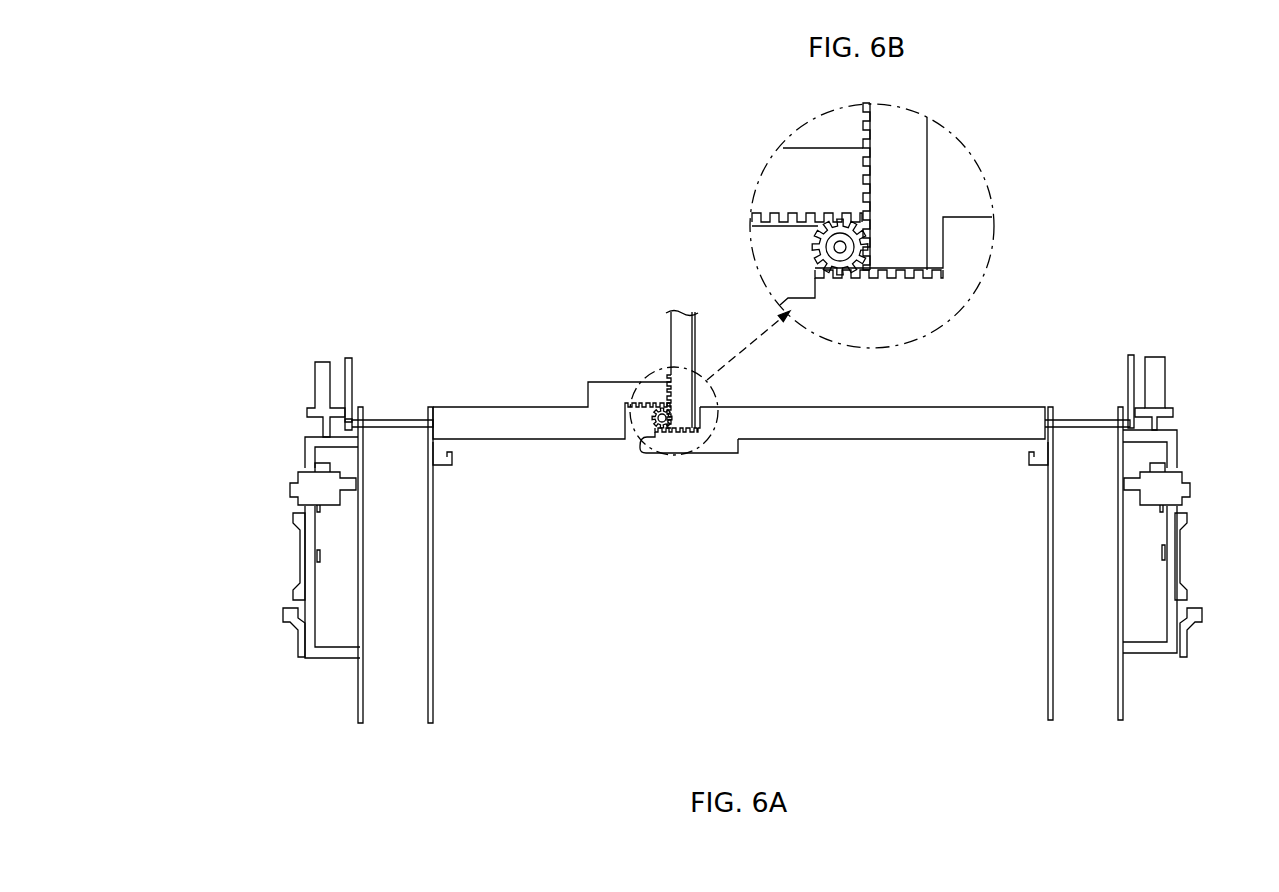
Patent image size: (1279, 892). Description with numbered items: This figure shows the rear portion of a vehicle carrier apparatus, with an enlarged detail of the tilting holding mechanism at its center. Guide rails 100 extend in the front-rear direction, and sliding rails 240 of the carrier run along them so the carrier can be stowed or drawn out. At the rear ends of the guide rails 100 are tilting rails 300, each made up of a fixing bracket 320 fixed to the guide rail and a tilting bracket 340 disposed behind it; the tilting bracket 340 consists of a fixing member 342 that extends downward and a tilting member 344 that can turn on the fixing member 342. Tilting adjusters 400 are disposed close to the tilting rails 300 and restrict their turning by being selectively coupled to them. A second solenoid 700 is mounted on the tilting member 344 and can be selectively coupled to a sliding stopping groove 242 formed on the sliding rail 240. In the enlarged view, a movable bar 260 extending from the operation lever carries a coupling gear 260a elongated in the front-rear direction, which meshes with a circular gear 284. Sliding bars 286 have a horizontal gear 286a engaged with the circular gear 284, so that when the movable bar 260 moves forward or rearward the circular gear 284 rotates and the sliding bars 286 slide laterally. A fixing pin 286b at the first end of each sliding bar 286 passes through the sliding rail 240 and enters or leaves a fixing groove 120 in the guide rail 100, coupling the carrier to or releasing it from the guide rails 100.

In FIG. 6A, the guide rail 100 is at (1136, 381).
In FIG. 6A, the fixing groove 120 is at (1140, 420).
In FIG. 6A, the sliding rail 240 is at (433, 670).
In FIG. 6A, the sliding stopping groove 242 is at (1122, 476).
In FIG. 6B, the movable bar 260 is at (913, 168).
In FIG. 6B, the coupling gear 260a is at (865, 125).
In FIG. 6B, the circular gear 284 is at (812, 246).
In FIG. 6A, the sliding bar 286 is at (986, 416).
In FIG. 6B, the horizontal gear 286a is at (870, 284).
In FIG. 6A, the fixing pin 286b is at (1078, 417).
In FIG. 6A, the tilting rail 300 is at (287, 546).
In FIG. 6A, the fixing bracket 320 is at (305, 421).
In FIG. 6A, the tilting bracket 340 is at (230, 585).
In FIG. 6A, the fixing member 342 is at (294, 574).
In FIG. 6A, the tilting member 344 is at (320, 626).
In FIG. 6A, the tilting adjuster 400 is at (329, 362).
In FIG. 6A, the second solenoid 700 is at (292, 491).